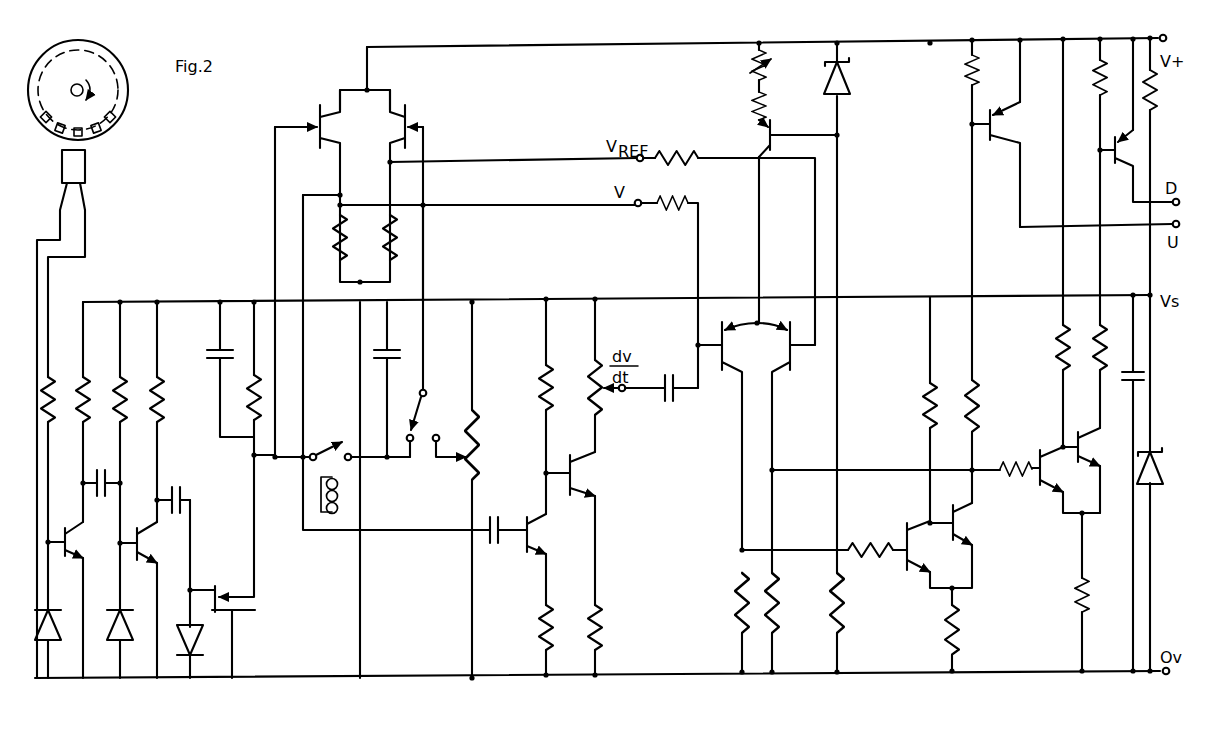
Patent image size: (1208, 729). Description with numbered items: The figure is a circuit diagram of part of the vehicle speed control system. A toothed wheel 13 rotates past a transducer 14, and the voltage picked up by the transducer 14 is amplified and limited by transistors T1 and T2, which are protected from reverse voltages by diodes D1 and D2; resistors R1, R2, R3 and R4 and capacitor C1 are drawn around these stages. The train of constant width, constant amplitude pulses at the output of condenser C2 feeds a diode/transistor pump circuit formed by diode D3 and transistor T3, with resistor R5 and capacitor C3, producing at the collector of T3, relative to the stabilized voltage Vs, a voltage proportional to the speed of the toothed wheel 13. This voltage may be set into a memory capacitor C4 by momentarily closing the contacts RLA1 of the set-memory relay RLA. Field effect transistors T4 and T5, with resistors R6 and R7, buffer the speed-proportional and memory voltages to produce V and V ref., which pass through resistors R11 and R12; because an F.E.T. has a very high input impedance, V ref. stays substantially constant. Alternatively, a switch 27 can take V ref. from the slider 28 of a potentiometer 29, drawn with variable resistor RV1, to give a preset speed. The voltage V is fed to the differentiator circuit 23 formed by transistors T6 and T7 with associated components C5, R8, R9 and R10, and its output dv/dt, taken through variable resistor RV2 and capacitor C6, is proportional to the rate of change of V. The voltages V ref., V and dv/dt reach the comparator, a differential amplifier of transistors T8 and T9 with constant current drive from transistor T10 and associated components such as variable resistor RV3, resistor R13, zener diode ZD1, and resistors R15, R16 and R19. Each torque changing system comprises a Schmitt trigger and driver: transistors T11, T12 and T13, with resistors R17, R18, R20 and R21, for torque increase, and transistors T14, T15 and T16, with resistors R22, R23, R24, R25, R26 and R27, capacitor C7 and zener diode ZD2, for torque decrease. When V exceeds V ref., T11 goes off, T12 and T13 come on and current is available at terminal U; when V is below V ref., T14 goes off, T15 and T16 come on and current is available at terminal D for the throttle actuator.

The toothed wheel 13 is at (123, 78).
The transducer 14 is at (87, 162).
The differentiator circuit 23 is at (635, 283).
The switch 27 is at (427, 406).
The slider 28 is at (462, 444).
The potentiometer 29 is at (469, 470).
The resistor R1 is at (58, 390).
The resistor R2 is at (92, 390).
The resistor R3 is at (129, 390).
The resistor R4 is at (166, 390).
The resistor R5 is at (244, 398).
The resistor R6 is at (327, 237).
The resistor R7 is at (402, 237).
The resistor R8 is at (534, 387).
The resistor R9 is at (532, 627).
The resistor R10 is at (612, 627).
The resistor R11 is at (672, 214).
The resistor R12 is at (685, 149).
The resistor R13 is at (744, 100).
The resistor R15 is at (790, 603).
The resistor R16 is at (856, 603).
The resistor R17 is at (870, 541).
The resistor R18 is at (972, 629).
The resistor R19 is at (819, 508).
The resistor R20 is at (990, 406).
The resistor R21 is at (958, 71).
The resistor R22 is at (1018, 458).
The resistor R23 is at (1062, 592).
The resistor R24 is at (1049, 347).
The resistor R25 is at (1103, 346).
The resistor R26 is at (1089, 89).
The resistor R27 is at (1164, 104).
The variable resistor RV1 is at (489, 490).
The variable resistor RV2 is at (611, 390).
The variable resistor RV3 is at (741, 63).
The capacitor C1 is at (101, 473).
The condenser C2 is at (173, 490).
The capacitor C3 is at (223, 369).
The memory capacitor C4 is at (393, 379).
The capacitor C5 is at (508, 519).
The capacitor C6 is at (681, 400).
The capacitor C7 is at (1125, 483).
The diode D1 is at (55, 615).
The diode D2 is at (128, 615).
The diode D3 is at (184, 630).
The zener diode ZD1 is at (857, 78).
The zener diode ZD2 is at (1164, 479).
The transistor T1 is at (78, 540).
The transistor T2 is at (149, 542).
The transistor T3 is at (222, 624).
The field effect transistor T4 is at (307, 139).
The field effect transistor T5 is at (411, 122).
The transistor T6 is at (549, 534).
The transistor T7 is at (583, 474).
The transistor T8 is at (733, 436).
The transistor T9 is at (786, 436).
The transistor T10 is at (798, 134).
The transistor T11 is at (923, 560).
The transistor T12 is at (980, 545).
The transistor T13 is at (1012, 133).
The transistor T14 is at (1062, 480).
The transistor T15 is at (1094, 470).
The transistor T16 is at (1136, 120).
The set-memory relay RLA is at (359, 495).
The set-memory relay contacts RLA1 is at (331, 446).